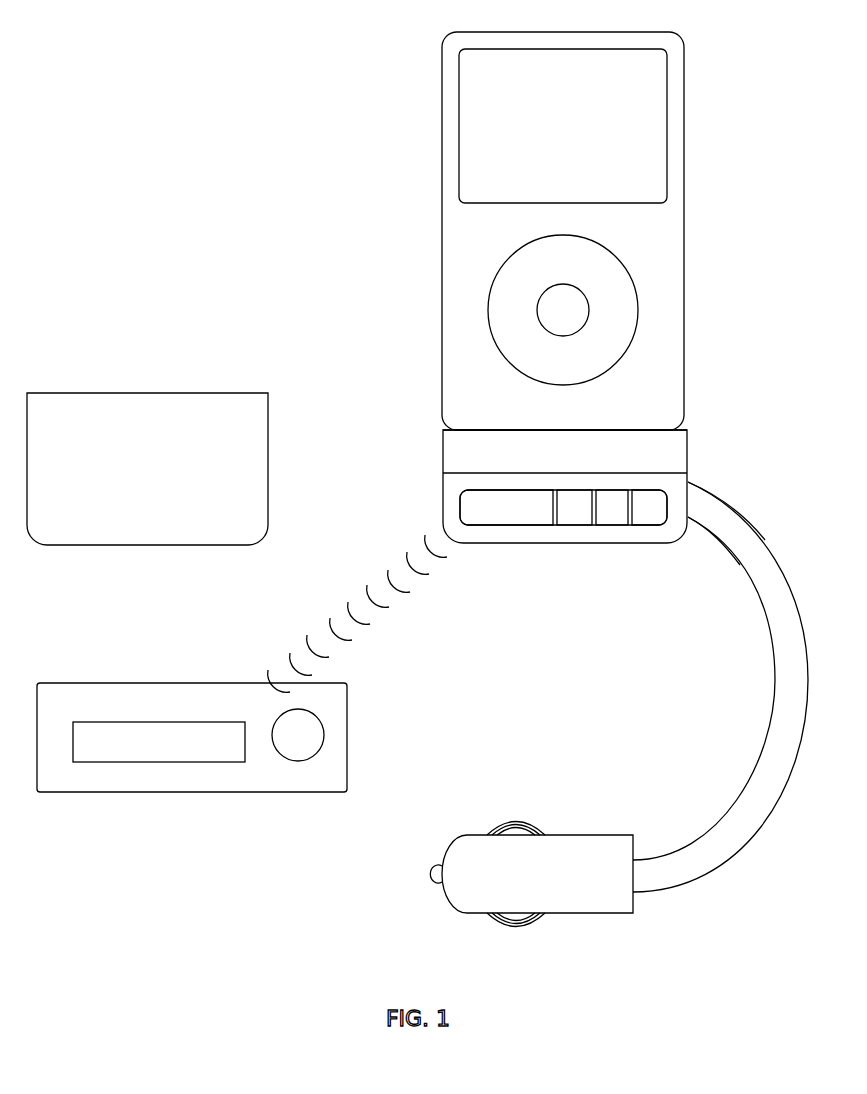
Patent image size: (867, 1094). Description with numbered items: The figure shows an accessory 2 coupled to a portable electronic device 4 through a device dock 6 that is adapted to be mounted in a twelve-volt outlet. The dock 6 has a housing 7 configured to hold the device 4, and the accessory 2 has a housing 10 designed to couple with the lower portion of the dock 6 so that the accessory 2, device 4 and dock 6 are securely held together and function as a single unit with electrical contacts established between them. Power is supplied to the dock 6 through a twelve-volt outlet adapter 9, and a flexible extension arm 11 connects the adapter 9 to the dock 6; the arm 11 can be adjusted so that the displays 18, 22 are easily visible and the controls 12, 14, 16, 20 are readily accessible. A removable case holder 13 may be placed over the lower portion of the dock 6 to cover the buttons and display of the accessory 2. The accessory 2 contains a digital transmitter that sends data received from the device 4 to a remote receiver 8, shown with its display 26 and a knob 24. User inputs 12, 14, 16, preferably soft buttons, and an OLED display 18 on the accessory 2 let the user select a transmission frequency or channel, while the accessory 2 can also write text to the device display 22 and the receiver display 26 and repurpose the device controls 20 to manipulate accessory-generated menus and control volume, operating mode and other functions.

The accessory 2 is at (440, 505).
The portable electronic device 4 is at (440, 223).
The device dock 6 is at (443, 438).
The housing 7 is at (655, 455).
The remote receiver 8 is at (88, 792).
The 12-volt outlet adapter 9 is at (562, 862).
The housing 10 is at (675, 505).
The flexible extension arm 11 is at (728, 837).
The user input 12 is at (650, 508).
The removable case holder 13 is at (87, 420).
The user input 14 is at (612, 508).
The user input 16 is at (574, 508).
The display 18 is at (506, 508).
The controls 20 is at (620, 310).
The display 22 is at (628, 158).
The radio knob 24 is at (300, 738).
The display 26 is at (157, 742).